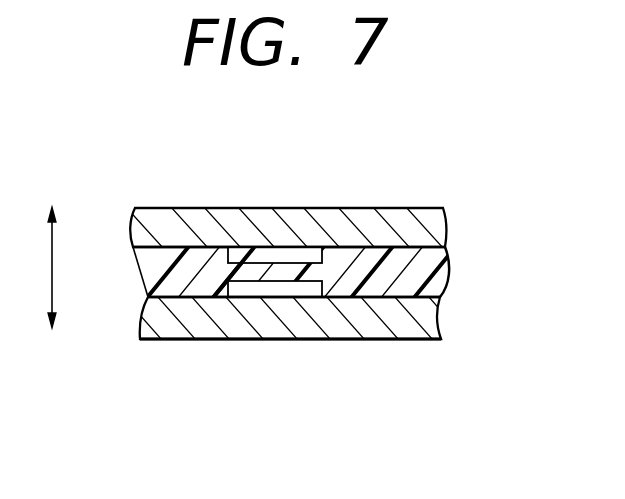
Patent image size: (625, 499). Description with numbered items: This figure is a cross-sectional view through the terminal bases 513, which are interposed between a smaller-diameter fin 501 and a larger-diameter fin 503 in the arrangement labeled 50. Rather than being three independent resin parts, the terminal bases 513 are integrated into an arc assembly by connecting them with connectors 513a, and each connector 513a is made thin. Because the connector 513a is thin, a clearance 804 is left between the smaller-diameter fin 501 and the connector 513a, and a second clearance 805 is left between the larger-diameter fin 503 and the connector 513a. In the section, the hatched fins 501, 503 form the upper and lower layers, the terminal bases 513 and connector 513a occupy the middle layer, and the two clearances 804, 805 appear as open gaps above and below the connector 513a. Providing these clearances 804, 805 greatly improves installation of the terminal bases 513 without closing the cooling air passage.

The display device 50 is at (190, 222).
The smaller-diameter fin 501 is at (326, 218).
The larger-diameter fin 503 is at (398, 325).
The terminal base 513 is at (256, 276).
The connector 513a is at (249, 283).
The clearance 804 is at (275, 258).
The clearance 805 is at (279, 284).